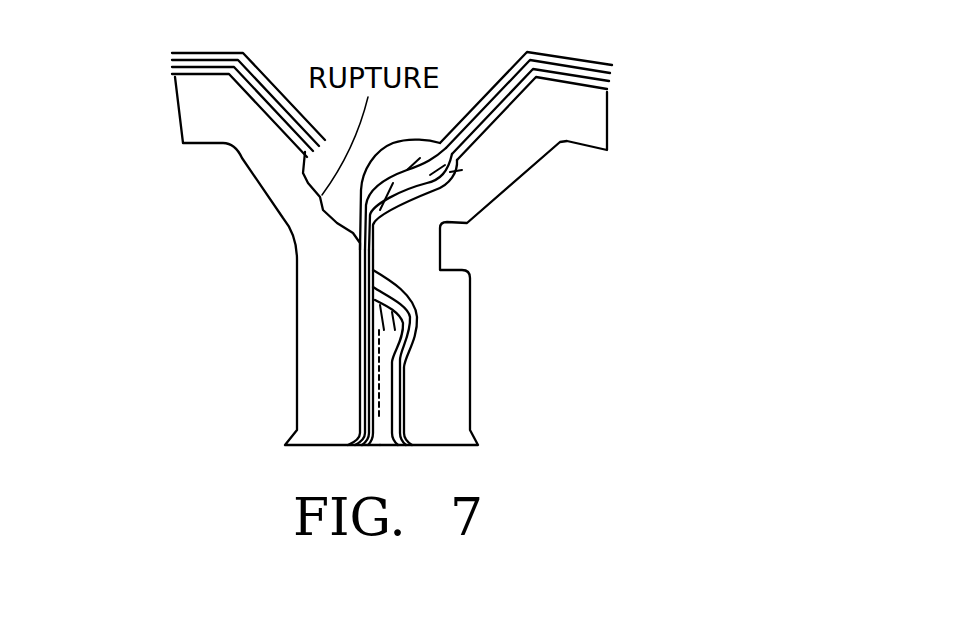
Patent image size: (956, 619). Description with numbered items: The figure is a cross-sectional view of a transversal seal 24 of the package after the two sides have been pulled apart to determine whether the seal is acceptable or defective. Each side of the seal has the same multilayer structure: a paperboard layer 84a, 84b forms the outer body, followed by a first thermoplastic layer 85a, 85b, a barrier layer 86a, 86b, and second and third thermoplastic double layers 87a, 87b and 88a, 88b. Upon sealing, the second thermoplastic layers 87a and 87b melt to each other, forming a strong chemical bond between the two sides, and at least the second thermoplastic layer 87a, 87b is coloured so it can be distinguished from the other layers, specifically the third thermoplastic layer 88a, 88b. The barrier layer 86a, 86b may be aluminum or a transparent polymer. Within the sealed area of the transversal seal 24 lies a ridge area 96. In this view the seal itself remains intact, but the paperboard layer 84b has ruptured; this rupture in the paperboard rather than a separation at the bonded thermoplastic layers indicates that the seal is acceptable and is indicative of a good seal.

The transversal seal 24 is at (697, 206).
The paperboard layer 84a is at (528, 158).
The paperboard layer 84b is at (258, 160).
The first thermoplastic layer 85a is at (607, 93).
The first thermoplastic layer 85b is at (173, 75).
The barrier layer 86a is at (613, 87).
The barrier layer 86b is at (173, 70).
The second thermoplastic layer 87a is at (613, 70).
The second thermoplastic layer 87b is at (172, 56).
The third thermoplastic layer 88a is at (613, 78).
The third thermoplastic layer 88b is at (172, 62).
The ridge area 96 is at (252, 280).